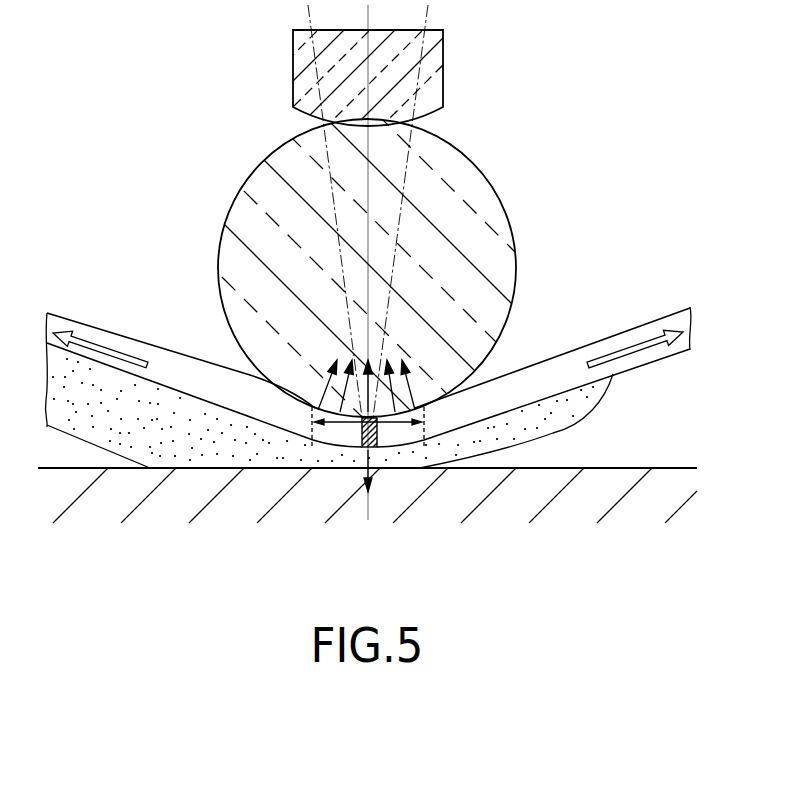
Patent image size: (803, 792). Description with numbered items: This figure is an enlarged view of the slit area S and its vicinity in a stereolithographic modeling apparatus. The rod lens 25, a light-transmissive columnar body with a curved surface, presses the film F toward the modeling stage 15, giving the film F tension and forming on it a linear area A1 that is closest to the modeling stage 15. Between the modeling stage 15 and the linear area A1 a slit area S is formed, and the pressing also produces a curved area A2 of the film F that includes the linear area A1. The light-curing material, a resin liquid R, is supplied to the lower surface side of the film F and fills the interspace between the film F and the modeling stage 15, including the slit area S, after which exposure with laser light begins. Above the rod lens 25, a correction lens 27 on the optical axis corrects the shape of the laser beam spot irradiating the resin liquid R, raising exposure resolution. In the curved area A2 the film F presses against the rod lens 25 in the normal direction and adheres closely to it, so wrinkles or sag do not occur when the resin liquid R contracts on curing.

The correction lens 27 is at (293, 63).
The rod lens 25 is at (228, 210).
The film F is at (561, 357).
The light-curing material (resin liquid) R is at (577, 425).
The modeling stage 15 is at (667, 469).
The slit area S is at (360, 462).
The linear area A1 is at (380, 432).
The curved area A2 is at (339, 425).